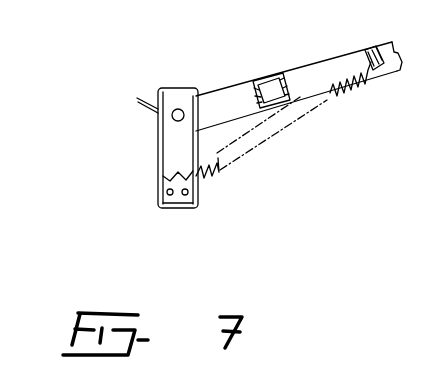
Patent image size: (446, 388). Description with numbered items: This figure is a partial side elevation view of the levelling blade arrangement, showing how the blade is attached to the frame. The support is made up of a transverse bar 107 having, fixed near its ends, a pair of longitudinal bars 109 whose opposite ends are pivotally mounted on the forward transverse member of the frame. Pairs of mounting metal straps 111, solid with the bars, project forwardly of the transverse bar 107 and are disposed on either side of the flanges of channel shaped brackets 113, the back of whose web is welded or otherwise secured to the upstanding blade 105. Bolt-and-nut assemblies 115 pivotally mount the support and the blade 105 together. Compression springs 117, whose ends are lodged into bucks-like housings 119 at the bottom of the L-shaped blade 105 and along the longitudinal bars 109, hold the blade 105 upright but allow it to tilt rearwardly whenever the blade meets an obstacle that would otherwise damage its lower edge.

The upstanding blade 105 is at (158, 153).
The transverse bar 107 is at (282, 105).
The longitudinal bars 109 is at (307, 82).
The mounting metal straps 111 is at (227, 103).
The channel shaped brackets 113 is at (188, 140).
The bolt-and-nut assemblies 115 is at (184, 105).
The compression springs 117 is at (208, 176).
The bucks-like housings 119 is at (382, 67).